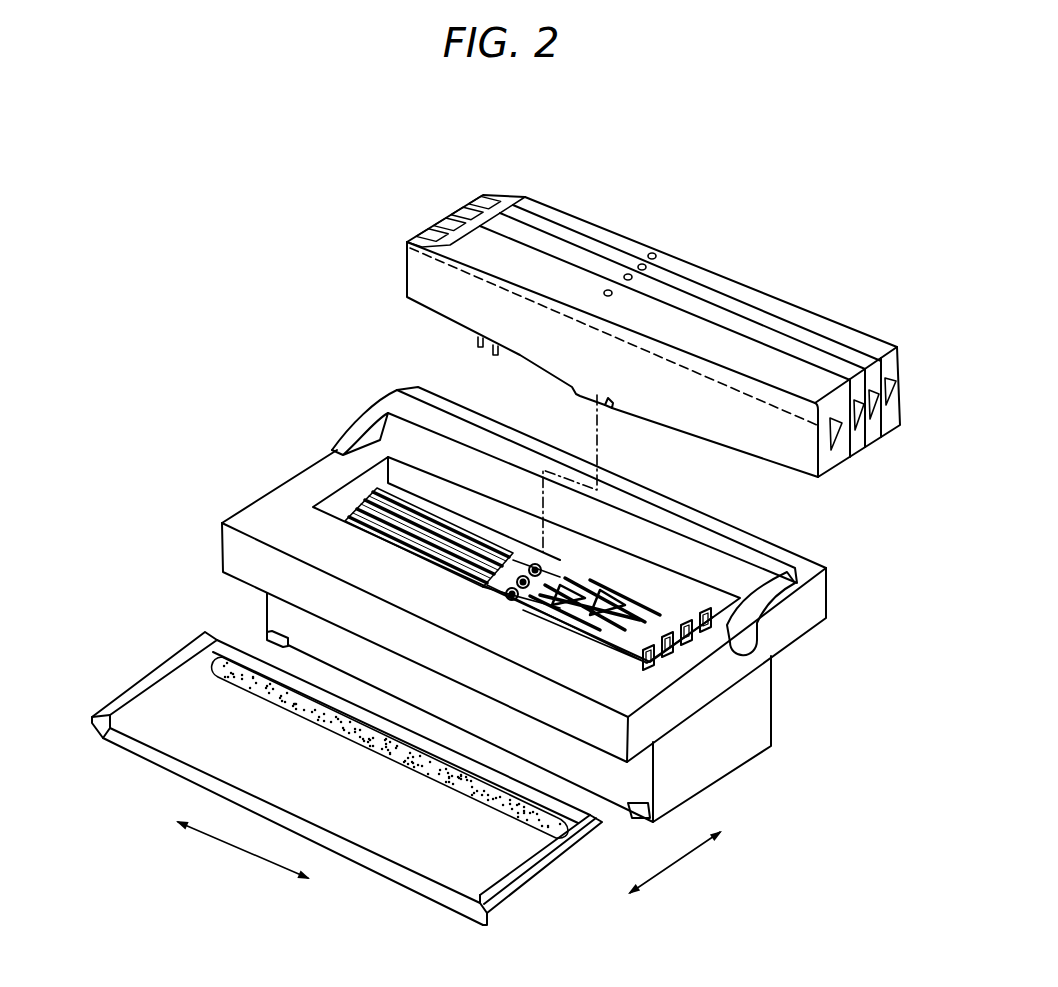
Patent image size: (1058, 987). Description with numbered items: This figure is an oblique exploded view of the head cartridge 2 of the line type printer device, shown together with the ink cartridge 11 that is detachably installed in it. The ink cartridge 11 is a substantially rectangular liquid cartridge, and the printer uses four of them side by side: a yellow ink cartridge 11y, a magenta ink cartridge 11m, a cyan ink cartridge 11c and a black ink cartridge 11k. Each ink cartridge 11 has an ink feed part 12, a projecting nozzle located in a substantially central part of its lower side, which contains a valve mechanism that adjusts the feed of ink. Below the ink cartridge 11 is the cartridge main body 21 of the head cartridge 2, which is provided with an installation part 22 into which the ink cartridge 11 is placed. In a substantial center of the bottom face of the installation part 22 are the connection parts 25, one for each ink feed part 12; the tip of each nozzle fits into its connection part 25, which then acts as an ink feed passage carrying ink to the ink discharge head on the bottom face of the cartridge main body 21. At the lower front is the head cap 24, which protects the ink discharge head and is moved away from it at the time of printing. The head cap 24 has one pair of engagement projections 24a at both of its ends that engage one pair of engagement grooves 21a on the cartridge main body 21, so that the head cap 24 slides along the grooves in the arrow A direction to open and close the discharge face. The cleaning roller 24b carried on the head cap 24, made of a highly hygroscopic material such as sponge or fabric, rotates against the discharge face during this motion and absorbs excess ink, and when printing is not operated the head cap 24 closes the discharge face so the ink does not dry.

The head cartridge 2 is at (252, 228).
The ink cartridge 11 is at (720, 198).
The yellow ink cartridge 11y is at (731, 285).
The magenta ink cartridge 11m is at (774, 322).
The cyan ink cartridge 11c is at (797, 350).
The black ink cartridge 11k is at (810, 378).
The ink feed part 12 is at (609, 406).
The cartridge main body 21 is at (763, 692).
The engagement grooves 21a is at (268, 633).
The installation part 22 is at (340, 500).
The head cap 24 is at (369, 860).
The engagement projections 24a is at (118, 698).
The cleaning roller 24b is at (217, 668).
The connection part 25 is at (543, 563).